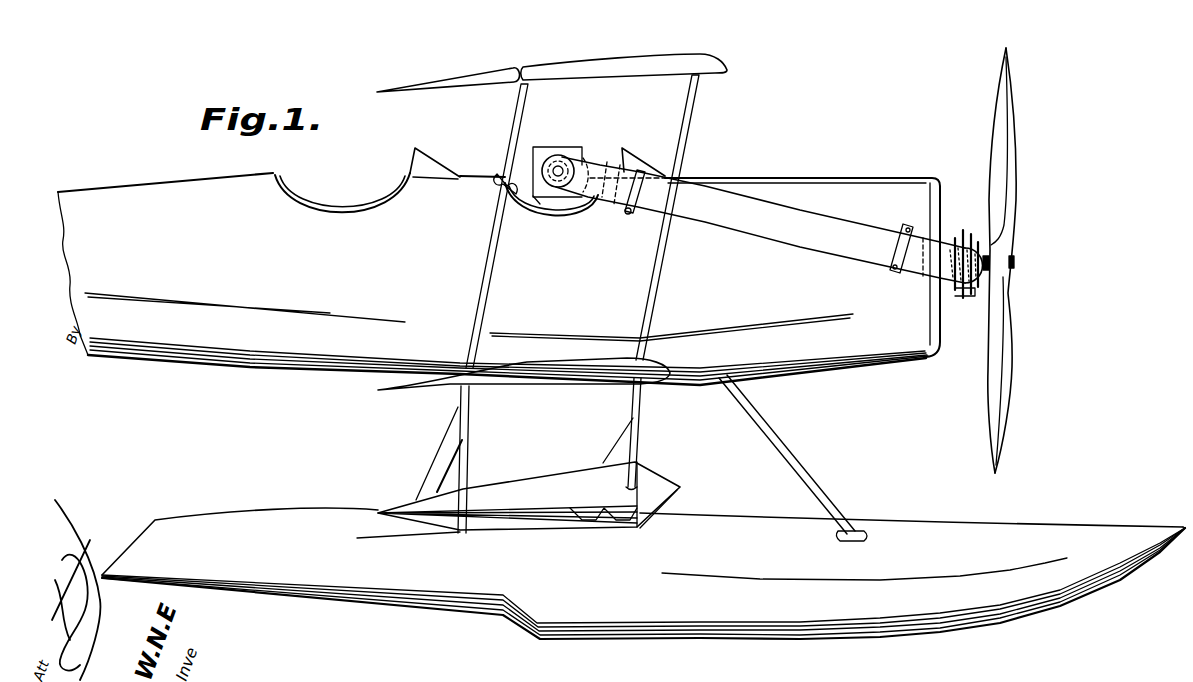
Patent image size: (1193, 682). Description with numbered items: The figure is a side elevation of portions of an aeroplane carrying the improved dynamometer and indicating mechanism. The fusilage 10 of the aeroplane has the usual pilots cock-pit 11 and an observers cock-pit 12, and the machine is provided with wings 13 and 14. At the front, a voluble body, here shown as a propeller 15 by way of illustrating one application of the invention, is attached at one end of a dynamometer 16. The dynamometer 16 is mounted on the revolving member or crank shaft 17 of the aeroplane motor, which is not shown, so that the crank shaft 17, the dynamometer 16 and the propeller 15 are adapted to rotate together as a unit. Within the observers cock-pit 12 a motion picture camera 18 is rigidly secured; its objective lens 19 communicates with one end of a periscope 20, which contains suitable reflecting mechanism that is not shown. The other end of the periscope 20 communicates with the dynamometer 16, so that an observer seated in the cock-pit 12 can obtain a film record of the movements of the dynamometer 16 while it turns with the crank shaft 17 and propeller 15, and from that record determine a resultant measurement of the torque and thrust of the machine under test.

The fusilage 10 is at (499, 266).
The pilots cock-pit 11 is at (330, 202).
The observers cock-pit 12 is at (505, 190).
The wing 13 is at (610, 60).
The wing 14 is at (527, 374).
The propeller 15 is at (1010, 185).
The dynamometer 16 is at (962, 298).
The crank shaft 17 is at (946, 243).
The motion picture camera 18 is at (578, 151).
The objective lens 19 is at (558, 169).
The periscope 20 is at (712, 196).